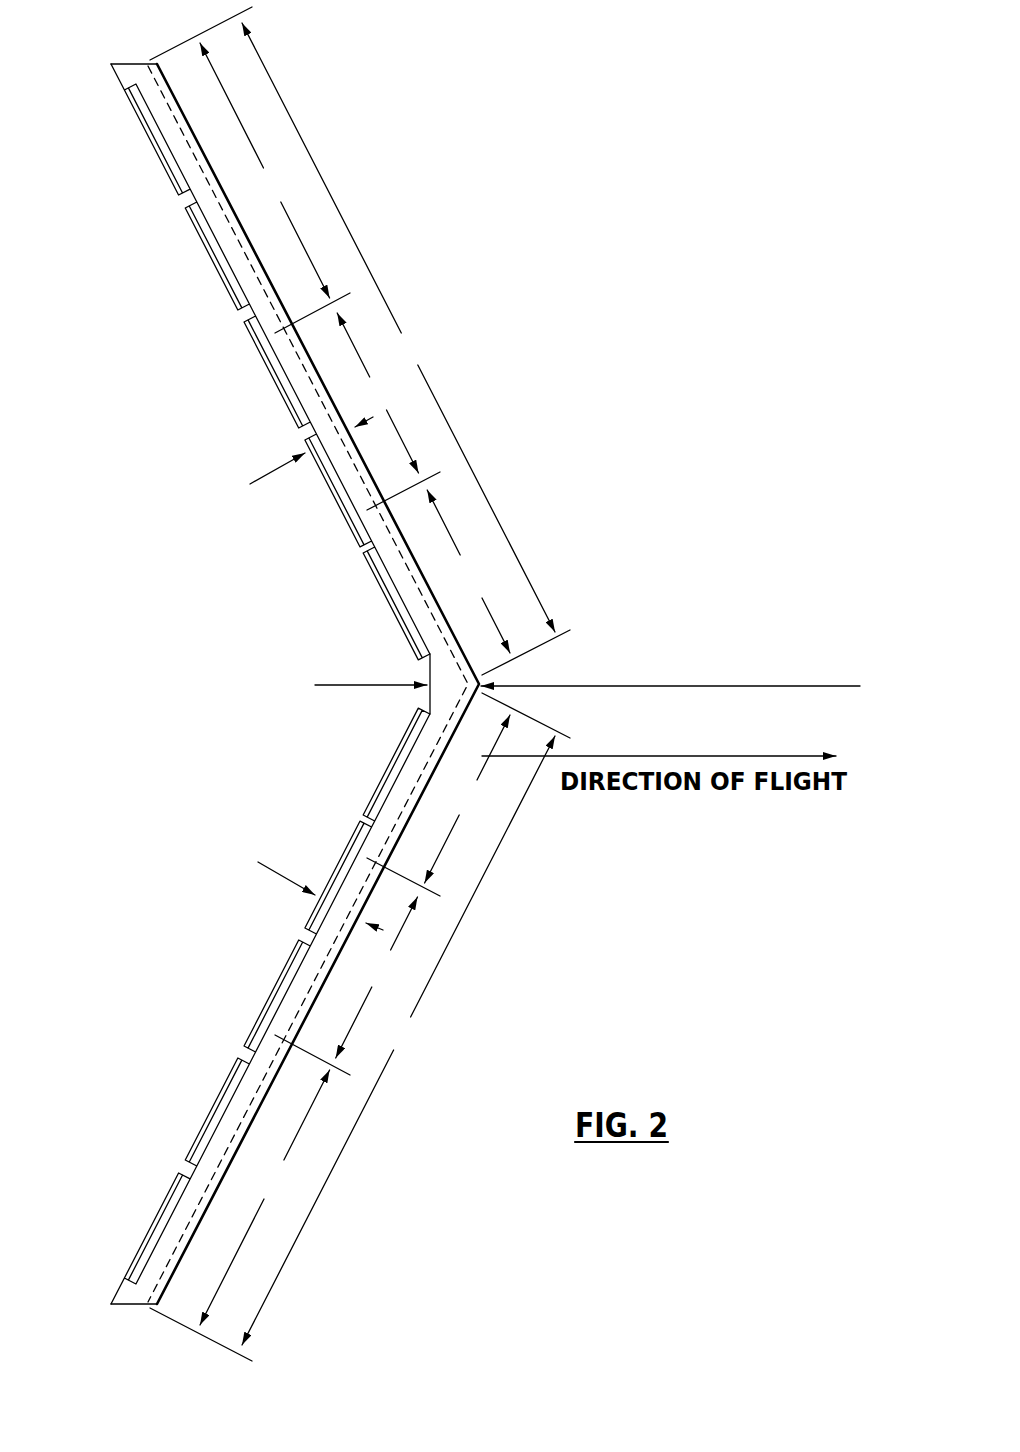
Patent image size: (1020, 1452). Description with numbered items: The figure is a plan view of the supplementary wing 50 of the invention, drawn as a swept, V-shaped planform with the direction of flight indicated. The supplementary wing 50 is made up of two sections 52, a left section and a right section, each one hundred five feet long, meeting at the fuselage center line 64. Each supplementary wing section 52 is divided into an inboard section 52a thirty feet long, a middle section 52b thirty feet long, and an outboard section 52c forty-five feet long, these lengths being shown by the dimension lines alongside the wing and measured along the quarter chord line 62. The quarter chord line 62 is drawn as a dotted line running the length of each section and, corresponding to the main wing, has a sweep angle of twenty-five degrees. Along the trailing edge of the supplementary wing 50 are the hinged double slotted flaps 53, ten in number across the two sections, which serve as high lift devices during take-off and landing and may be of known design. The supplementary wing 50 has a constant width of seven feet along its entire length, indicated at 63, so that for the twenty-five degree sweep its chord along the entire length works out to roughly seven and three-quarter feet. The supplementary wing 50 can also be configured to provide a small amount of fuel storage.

The supplementary wing 50 is at (523, 282).
The supplementary wing section 52 is at (272, 512).
The inboard section 52a is at (469, 511).
The middle section 52b is at (418, 430).
The outboard section 52c is at (283, 143).
The flap / control surface 53 is at (150, 140).
The quarter chord line 62 is at (257, 245).
The width of the supplementary wing 63 is at (250, 484).
The fuselage center line 64 is at (602, 688).